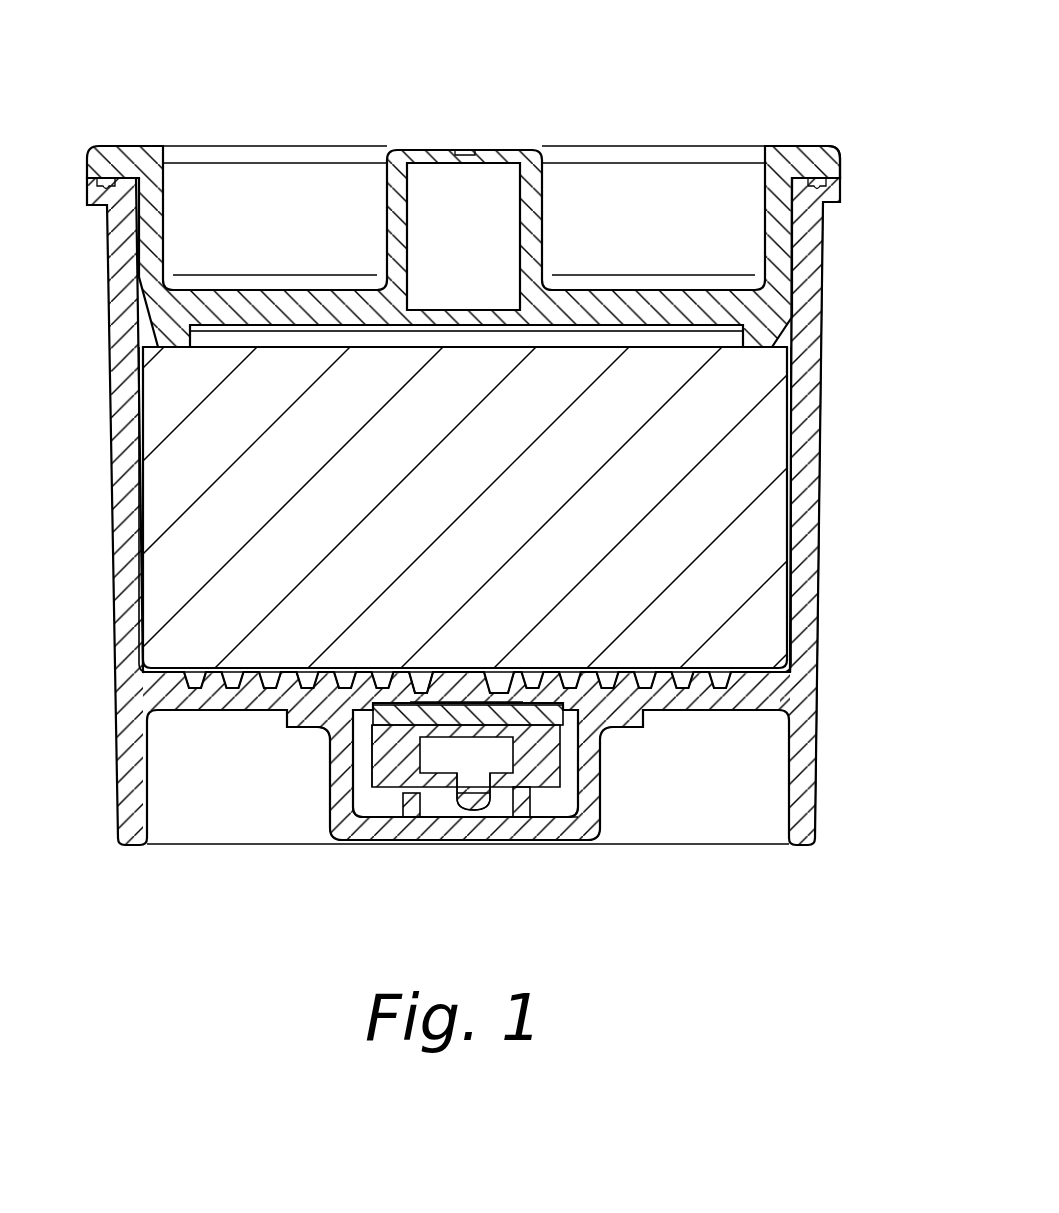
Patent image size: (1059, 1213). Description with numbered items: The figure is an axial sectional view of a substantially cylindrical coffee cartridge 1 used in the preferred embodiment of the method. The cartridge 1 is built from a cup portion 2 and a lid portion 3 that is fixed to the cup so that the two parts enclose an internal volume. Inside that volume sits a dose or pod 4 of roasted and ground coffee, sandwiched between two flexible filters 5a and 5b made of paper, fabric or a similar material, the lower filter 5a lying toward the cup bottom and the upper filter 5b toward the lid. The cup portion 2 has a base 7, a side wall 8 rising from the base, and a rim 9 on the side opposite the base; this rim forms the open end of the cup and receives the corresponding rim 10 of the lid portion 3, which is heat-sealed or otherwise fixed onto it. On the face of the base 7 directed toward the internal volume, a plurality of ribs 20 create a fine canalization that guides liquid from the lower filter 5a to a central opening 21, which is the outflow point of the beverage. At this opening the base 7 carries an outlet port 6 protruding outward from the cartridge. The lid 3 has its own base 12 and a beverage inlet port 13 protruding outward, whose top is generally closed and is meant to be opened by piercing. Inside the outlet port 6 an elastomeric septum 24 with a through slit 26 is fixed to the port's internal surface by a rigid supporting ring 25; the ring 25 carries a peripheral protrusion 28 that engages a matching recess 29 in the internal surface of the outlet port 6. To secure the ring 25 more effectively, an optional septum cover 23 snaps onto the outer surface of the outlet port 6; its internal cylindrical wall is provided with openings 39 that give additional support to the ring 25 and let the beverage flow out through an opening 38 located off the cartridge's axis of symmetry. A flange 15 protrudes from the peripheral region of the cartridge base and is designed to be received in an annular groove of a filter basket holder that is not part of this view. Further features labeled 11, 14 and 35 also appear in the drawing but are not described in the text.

The cartridge 1 is at (697, 115).
The cup portion 2 is at (105, 775).
The lid portion 3 is at (276, 124).
The dose or pod 4 is at (177, 502).
The lower flexible filter 5a is at (260, 668).
The upper flexible filter 5b is at (288, 332).
The outlet port 6 is at (600, 793).
The base 7 is at (733, 698).
The side wall 8 is at (805, 393).
The rim 9 is at (838, 193).
The rim 10 is at (800, 147).
The left compartment 11 is at (360, 247).
The base 12 is at (648, 305).
The beverage inlet port 13 is at (536, 214).
The boss top 14 is at (430, 146).
The flange 15 is at (805, 790).
The ribs 20 is at (645, 677).
The opening 21 is at (422, 690).
The septum cover 23 is at (420, 833).
The septum 24 is at (330, 747).
The supporting ring 25 is at (397, 760).
The through slit 26 is at (482, 690).
The peripheral protrusion 28 is at (353, 765).
The recess 29 is at (367, 770).
The support post 35 is at (518, 812).
The opening 38 is at (545, 840).
The openings 39 is at (473, 808).